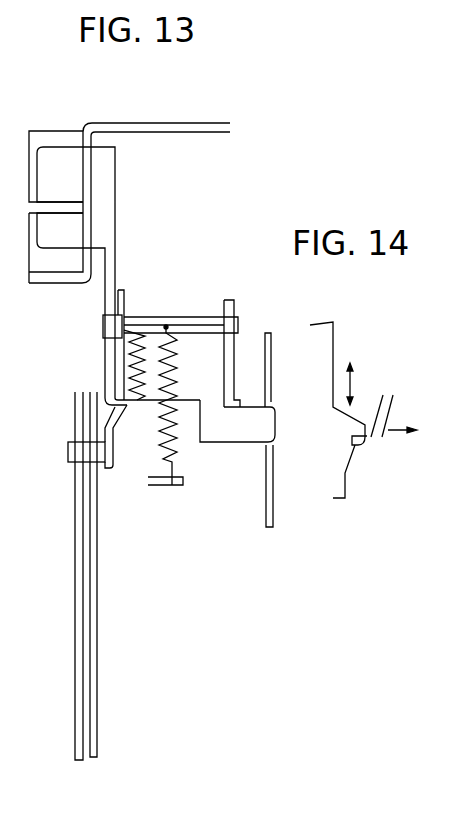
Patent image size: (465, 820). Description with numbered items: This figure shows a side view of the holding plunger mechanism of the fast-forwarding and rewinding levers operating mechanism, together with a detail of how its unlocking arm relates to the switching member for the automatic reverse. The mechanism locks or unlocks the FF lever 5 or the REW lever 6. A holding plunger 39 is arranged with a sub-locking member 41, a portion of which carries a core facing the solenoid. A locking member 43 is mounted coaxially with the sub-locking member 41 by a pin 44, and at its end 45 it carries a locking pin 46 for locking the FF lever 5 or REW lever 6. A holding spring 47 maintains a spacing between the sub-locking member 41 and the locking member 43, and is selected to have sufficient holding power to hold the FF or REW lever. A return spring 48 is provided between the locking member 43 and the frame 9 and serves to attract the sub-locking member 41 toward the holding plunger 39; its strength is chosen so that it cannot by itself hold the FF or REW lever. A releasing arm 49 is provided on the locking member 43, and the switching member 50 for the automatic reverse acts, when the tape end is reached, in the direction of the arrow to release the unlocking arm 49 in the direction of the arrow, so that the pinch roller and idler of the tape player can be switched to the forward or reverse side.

In FIG. 13, the FF lever 5 is at (99, 737).
In FIG. 13, the REW lever 6 is at (75, 727).
In FIG. 13, the frame 9 is at (183, 485).
In FIG. 13, the holding plunger 39 is at (88, 126).
In FIG. 13, the sub-locking member 41 is at (107, 212).
In FIG. 13, the locking member 43 is at (122, 300).
In FIG. 13, the pin 44 is at (103, 325).
In FIG. 13, the end 45 is at (115, 450).
In FIG. 13, the locking pin 46 is at (68, 447).
In FIG. 13, the holding spring 47 is at (127, 365).
In FIG. 13, the return spring 48 is at (175, 430).
In FIG. 13, the releasing arm 49 is at (230, 427).
In FIG. 14, the releasing arm 49 is at (385, 442).
In FIG. 13, the switching member 50 is at (273, 502).
In FIG. 14, the switching member 50 is at (334, 500).